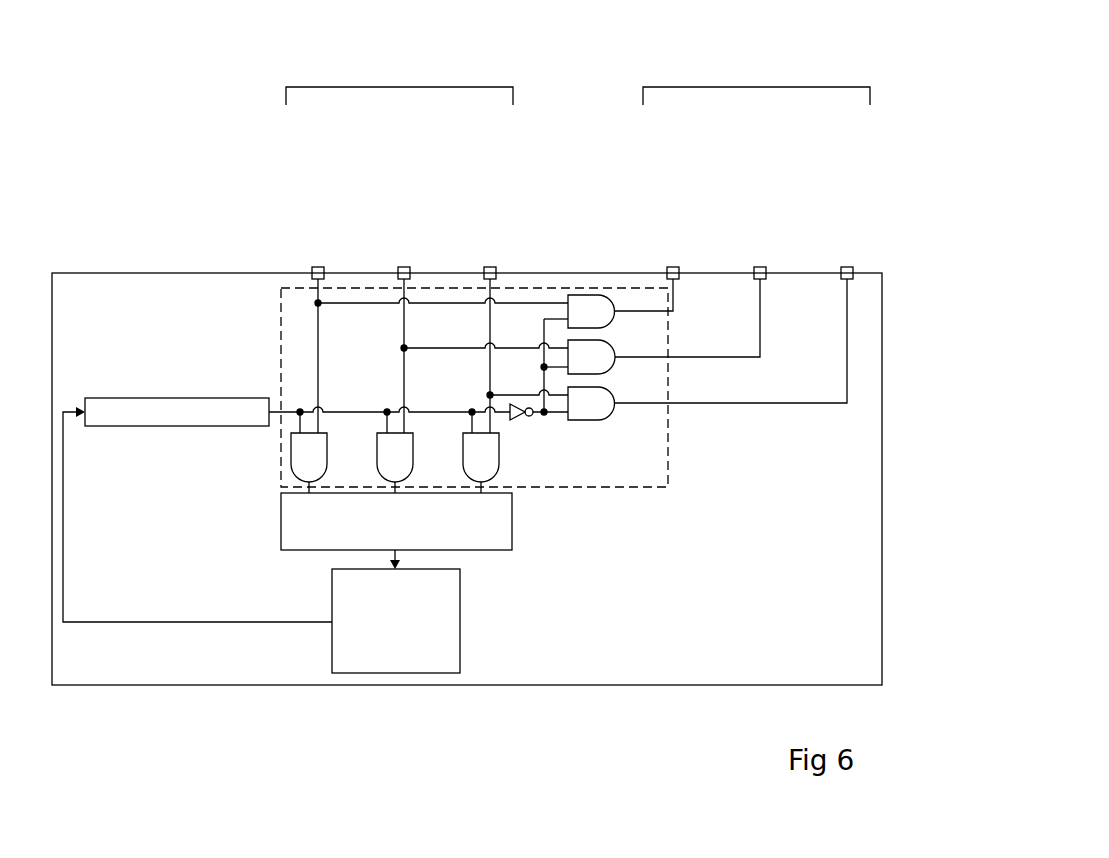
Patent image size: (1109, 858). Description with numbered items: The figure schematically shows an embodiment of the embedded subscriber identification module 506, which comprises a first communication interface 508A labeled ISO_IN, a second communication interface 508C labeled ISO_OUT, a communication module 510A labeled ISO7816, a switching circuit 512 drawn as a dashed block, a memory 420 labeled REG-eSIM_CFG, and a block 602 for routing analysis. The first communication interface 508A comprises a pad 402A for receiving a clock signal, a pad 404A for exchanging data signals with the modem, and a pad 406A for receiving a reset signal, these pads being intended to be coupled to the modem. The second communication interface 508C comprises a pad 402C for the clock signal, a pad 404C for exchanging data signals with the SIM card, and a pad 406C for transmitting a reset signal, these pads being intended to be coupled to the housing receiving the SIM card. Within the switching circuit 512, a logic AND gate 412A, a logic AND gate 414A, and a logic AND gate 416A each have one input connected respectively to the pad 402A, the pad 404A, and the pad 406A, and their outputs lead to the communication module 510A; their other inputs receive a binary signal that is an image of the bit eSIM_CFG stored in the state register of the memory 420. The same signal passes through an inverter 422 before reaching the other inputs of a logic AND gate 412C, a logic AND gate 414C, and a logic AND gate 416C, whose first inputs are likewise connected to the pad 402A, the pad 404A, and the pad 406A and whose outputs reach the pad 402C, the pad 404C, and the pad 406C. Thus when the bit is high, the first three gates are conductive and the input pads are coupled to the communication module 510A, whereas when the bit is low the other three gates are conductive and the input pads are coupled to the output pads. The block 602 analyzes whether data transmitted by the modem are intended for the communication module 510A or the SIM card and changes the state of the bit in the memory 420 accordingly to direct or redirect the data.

The embedded subscriber identification module 506 is at (866, 52).
The first communication interface 508A is at (292, 264).
The second communication interface 508C is at (866, 268).
The pad 402A is at (323, 266).
The pad 404A is at (409, 266).
The pad 406A is at (495, 266).
The pad 402C is at (678, 266).
The pad 404C is at (765, 266).
The pad 406C is at (852, 266).
The logic AND gate 412A is at (327, 455).
The logic AND gate 414A is at (413, 455).
The logic AND gate 416A is at (499, 455).
The logic AND gate 412C is at (605, 325).
The logic AND gate 414C is at (605, 371).
The logic AND gate 416C is at (590, 420).
The inverter 422 is at (517, 423).
The switching circuit 512 is at (668, 455).
The memory 420 is at (158, 428).
The communication module 510A is at (512, 520).
The block 602 is at (460, 630).